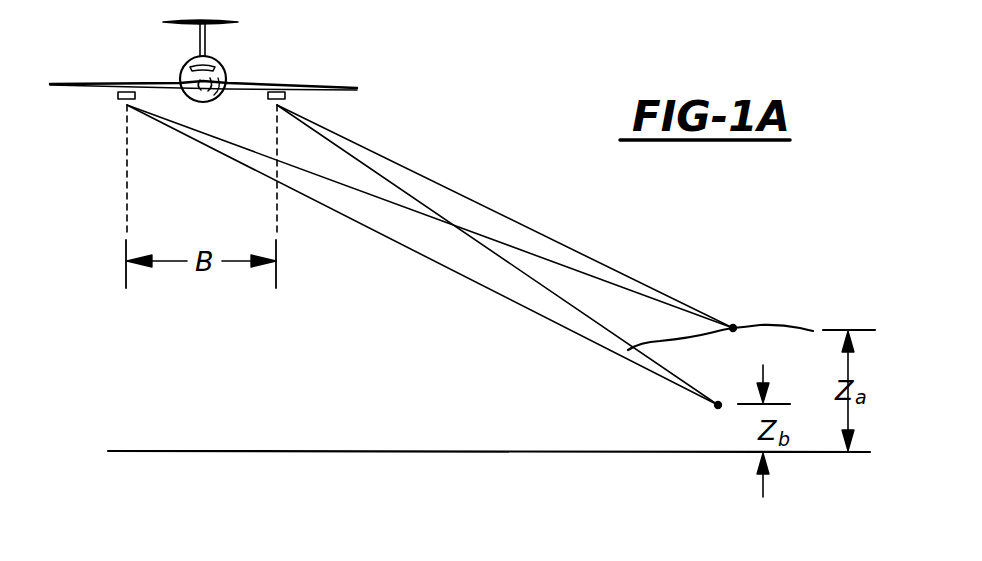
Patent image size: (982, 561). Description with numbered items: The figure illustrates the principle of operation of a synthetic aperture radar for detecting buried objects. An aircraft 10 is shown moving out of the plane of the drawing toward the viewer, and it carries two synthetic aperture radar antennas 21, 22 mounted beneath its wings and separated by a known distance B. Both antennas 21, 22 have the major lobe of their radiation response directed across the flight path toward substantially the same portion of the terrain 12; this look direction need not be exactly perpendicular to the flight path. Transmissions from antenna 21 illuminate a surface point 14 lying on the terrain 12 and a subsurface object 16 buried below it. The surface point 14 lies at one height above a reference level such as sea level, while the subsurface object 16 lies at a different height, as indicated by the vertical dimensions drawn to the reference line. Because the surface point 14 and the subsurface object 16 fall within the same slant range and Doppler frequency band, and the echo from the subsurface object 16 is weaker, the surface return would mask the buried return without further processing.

The aircraft 10 is at (172, 56).
The synthetic aperture radar antenna 21 is at (118, 99).
The synthetic aperture radar antenna 22 is at (285, 99).
The terrain 12 is at (768, 325).
The surface point 14 is at (735, 331).
The subsurface object 16 is at (720, 402).